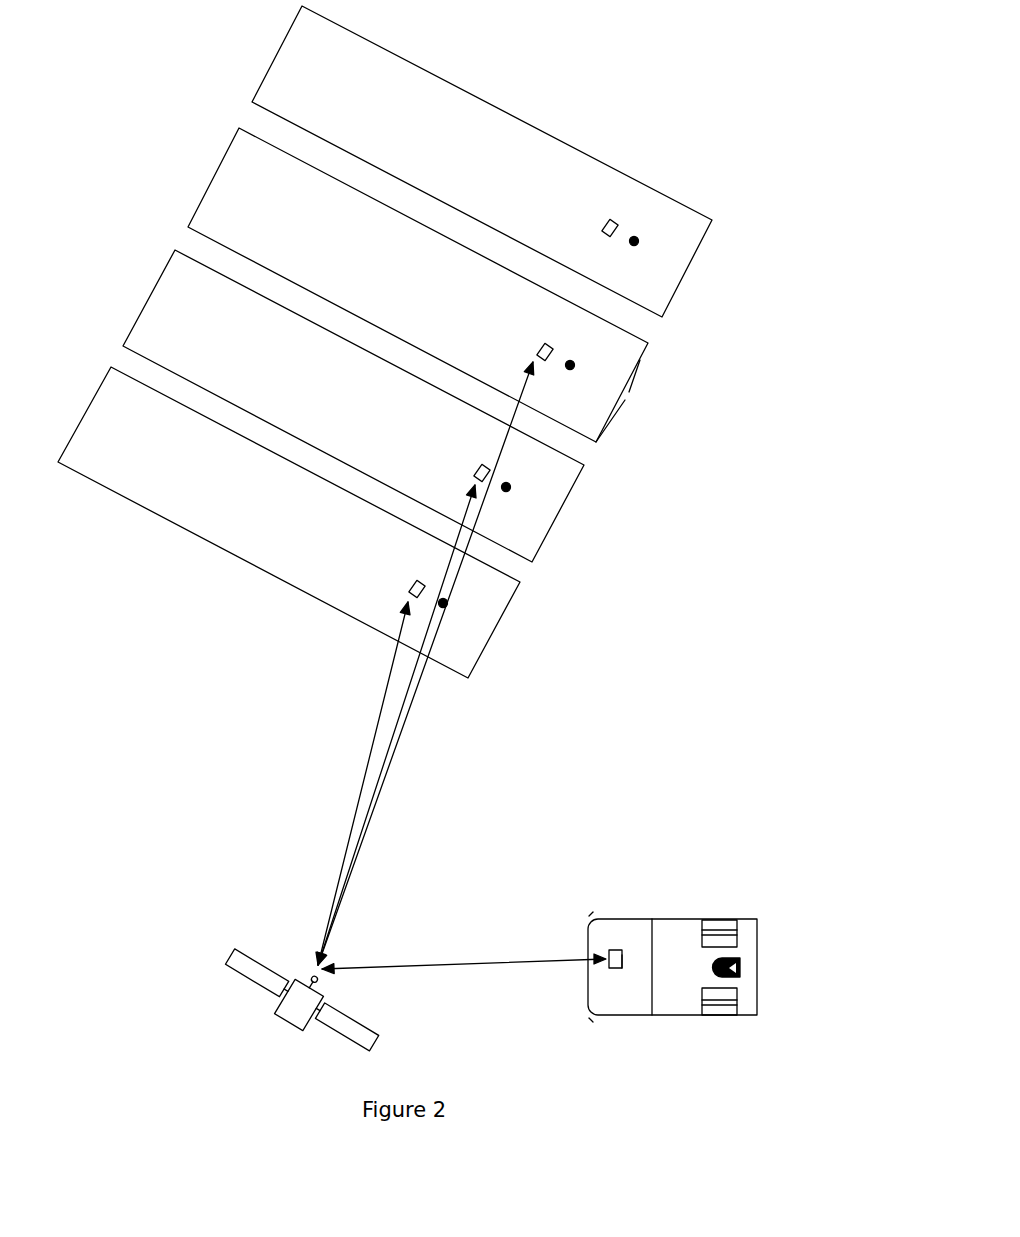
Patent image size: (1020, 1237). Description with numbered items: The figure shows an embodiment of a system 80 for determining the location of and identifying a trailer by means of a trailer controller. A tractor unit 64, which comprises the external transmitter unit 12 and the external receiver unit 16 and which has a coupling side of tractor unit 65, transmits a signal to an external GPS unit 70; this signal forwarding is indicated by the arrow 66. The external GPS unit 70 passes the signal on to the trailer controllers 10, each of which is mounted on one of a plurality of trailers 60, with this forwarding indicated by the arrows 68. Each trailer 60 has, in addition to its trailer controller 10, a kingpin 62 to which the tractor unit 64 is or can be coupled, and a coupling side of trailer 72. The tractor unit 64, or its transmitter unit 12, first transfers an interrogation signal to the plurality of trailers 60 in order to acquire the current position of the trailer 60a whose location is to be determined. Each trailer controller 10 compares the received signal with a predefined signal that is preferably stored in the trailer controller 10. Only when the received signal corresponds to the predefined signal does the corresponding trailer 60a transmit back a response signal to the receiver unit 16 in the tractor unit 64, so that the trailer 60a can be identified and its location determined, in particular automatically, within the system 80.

The system 80 is at (137, 125).
The trailer 60 is at (660, 192).
The trailer whose location is to be determined 60a is at (627, 395).
The coupling side of trailer 72 is at (618, 410).
The trailer controller 10 is at (604, 222).
The kingpin 62 is at (639, 242).
The signal transmission 68 is at (412, 715).
The signal transmission 66 is at (420, 965).
The external GPS unit 70 is at (295, 1028).
The tractor unit 64 is at (702, 967).
The coupling side of tractor unit 65 is at (758, 985).
The transmitter unit 12 is at (621, 952).
The receiver unit 16 is at (622, 962).